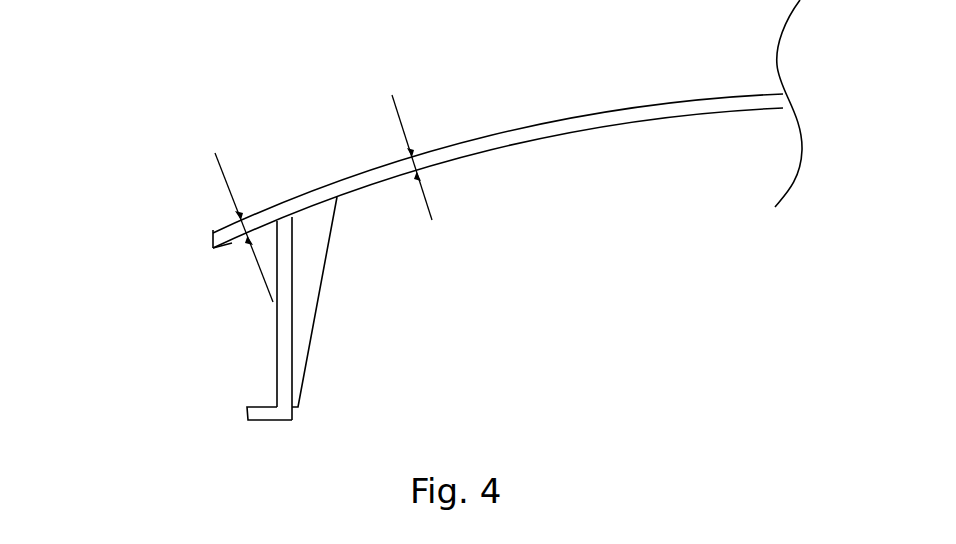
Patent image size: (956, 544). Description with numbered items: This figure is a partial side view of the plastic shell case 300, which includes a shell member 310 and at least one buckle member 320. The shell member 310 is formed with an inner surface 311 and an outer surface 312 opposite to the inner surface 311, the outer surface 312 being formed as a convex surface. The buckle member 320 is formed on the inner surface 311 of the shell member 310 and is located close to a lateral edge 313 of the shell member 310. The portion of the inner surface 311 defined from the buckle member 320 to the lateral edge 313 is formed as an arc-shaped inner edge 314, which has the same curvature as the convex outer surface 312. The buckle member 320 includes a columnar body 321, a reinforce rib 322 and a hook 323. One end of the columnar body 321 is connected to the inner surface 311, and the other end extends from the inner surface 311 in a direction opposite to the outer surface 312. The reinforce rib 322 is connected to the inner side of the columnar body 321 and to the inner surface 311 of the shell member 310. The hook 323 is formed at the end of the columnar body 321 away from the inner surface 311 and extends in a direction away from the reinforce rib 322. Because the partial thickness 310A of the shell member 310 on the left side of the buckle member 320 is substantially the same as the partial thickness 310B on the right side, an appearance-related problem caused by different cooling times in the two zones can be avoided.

The plastic shell case 300 is at (445, 337).
The shell member 310 is at (363, 178).
The inner surface 311 is at (525, 142).
The outer surface 312 is at (457, 143).
The lateral edge 313 is at (213, 240).
The arc-shaped inner edge 314 is at (232, 248).
The partial thickness 310A is at (235, 223).
The partial thickness 310B is at (397, 158).
The buckle member 320 is at (383, 363).
The columnar body 321 is at (285, 380).
The reinforce rib 322 is at (300, 337).
The hook 323 is at (273, 422).